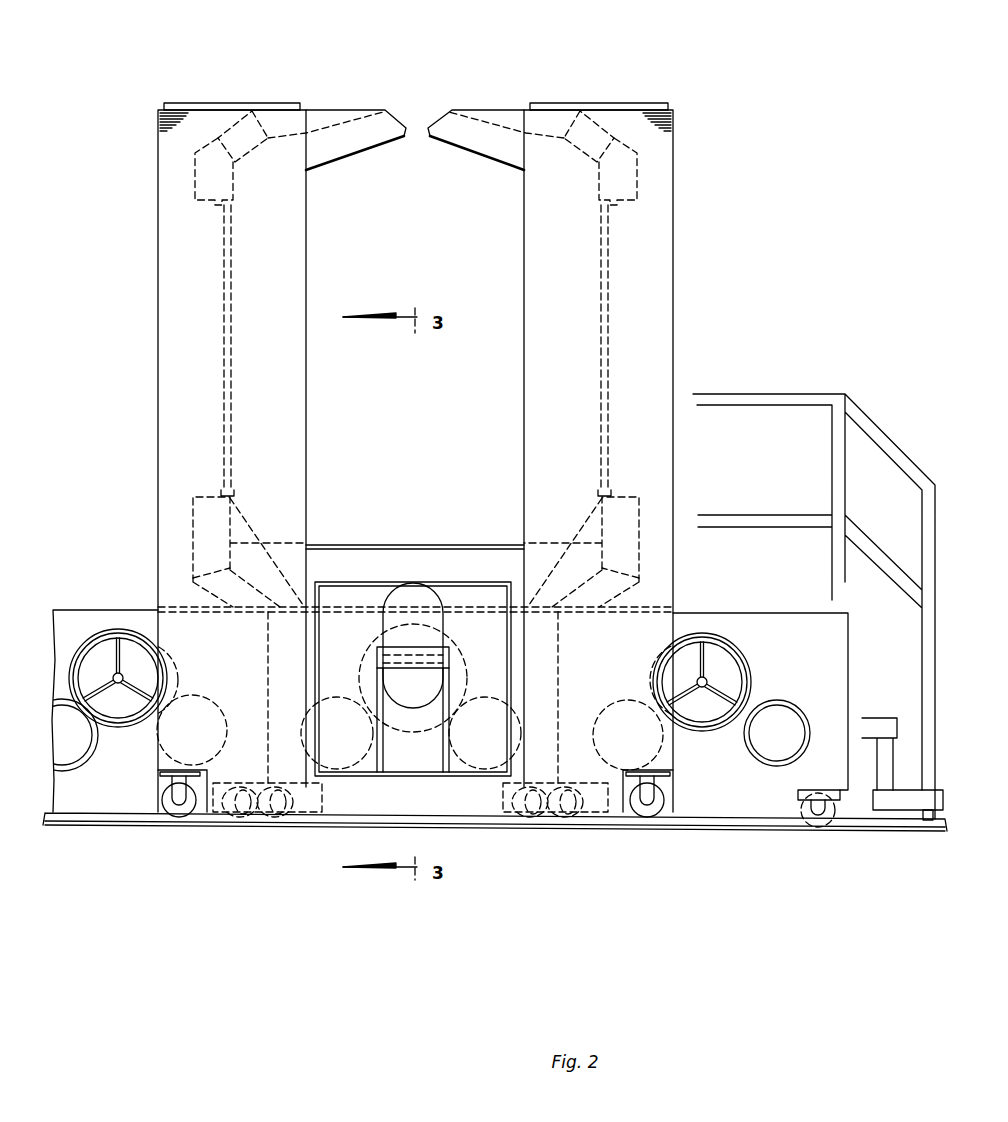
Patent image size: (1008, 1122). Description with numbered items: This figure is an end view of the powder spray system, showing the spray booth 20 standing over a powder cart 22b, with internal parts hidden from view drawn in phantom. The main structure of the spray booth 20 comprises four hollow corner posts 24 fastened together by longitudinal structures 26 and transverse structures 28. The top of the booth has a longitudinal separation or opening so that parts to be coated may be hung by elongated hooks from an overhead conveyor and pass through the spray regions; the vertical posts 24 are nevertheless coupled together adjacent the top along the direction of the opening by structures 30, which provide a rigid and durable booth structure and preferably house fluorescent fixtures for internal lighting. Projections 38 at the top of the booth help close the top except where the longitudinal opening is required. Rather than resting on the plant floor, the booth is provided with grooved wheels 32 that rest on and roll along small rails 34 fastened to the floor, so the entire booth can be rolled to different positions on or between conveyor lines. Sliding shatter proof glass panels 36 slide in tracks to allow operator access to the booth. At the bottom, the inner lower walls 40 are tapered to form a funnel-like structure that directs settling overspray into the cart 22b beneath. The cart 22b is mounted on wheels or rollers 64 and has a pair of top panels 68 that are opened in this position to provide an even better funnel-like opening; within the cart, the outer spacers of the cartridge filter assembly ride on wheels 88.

The spray booth 20 is at (560, 93).
The powder cart 22b is at (350, 800).
The hollow corner posts 24 is at (158, 128).
The longitudinal structures 26 is at (192, 530).
The transverse structures 28 is at (436, 545).
The structures 30 is at (237, 125).
The grooved wheels 32 is at (177, 814).
The small rails 34 is at (80, 816).
The sliding shatter proof glass panels 36 is at (224, 250).
The projections 38 is at (362, 110).
The inner lower walls 40 is at (193, 578).
The wheels or rollers 64 is at (263, 826).
The top panels 68 is at (255, 532).
The wheels 88 is at (334, 697).